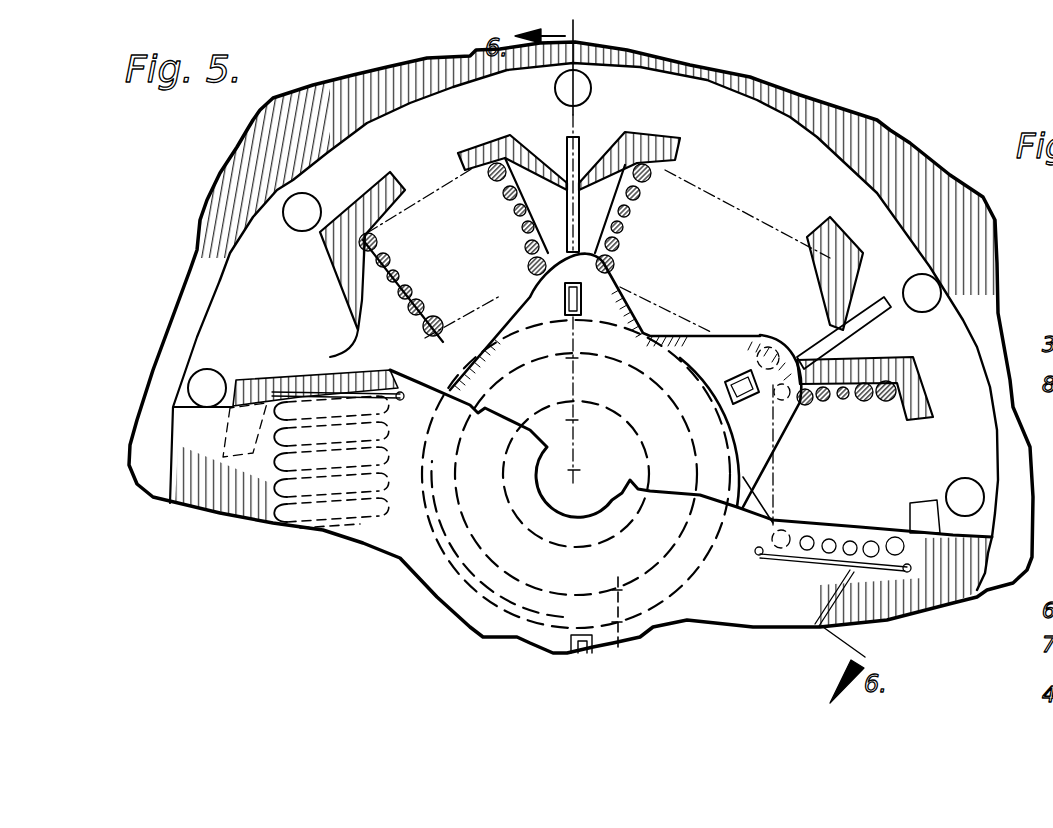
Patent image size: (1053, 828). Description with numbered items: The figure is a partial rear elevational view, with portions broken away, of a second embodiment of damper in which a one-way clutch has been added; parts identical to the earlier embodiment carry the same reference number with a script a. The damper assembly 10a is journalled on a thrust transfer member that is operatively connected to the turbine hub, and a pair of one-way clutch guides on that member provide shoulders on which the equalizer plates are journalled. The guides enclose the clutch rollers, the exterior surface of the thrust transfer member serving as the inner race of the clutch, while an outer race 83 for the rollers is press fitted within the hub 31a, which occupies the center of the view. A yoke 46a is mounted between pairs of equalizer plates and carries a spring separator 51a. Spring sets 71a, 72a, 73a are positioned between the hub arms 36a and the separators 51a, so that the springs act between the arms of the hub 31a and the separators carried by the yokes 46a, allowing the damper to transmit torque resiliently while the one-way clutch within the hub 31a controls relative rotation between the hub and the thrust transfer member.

The damper assembly 10a is at (925, 135).
The hub 31a is at (710, 474).
The yoke 46a is at (582, 153).
The spring separator 51a is at (523, 153).
The spring set 71a is at (392, 226).
The spring set 73a is at (668, 181).
The hub arm 36a is at (390, 278).
The spring set 72a is at (362, 530).
The outer race 83 is at (631, 631).